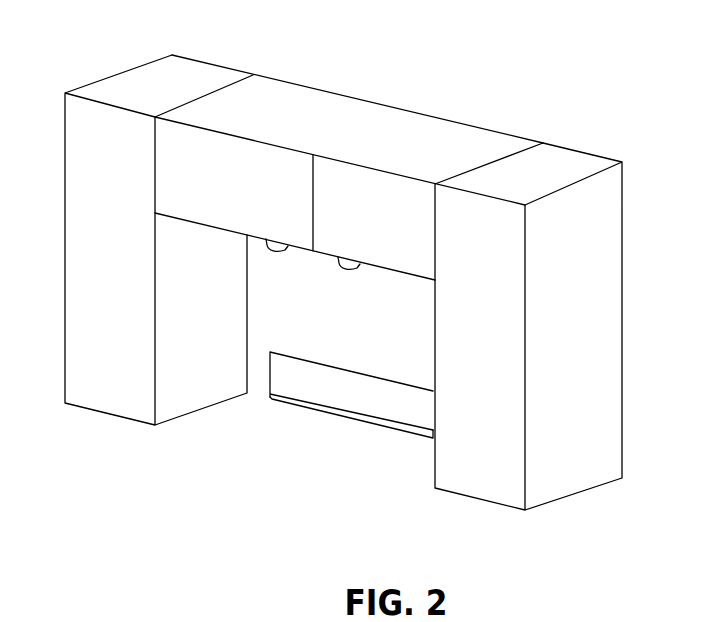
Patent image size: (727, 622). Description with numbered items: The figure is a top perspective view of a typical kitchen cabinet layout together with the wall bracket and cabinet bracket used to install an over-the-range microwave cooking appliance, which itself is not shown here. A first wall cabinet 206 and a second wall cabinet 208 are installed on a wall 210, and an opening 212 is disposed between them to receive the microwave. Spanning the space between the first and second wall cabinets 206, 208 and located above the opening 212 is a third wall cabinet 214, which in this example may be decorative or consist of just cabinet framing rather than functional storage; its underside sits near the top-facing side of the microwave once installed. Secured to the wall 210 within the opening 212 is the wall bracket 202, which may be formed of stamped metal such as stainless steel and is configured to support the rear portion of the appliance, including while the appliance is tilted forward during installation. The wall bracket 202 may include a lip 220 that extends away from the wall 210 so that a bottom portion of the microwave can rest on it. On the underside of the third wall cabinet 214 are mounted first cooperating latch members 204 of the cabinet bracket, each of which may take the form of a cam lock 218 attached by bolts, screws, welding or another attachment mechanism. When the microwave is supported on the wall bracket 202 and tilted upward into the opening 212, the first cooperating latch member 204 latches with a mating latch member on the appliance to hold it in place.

The wall bracket 202 is at (285, 380).
The first cooperating latch member 204 is at (273, 209).
The first wall cabinet 206 is at (85, 395).
The second wall cabinet 208 is at (468, 478).
The wall 210 is at (285, 320).
The opening 212 is at (400, 297).
The third wall cabinet 214 is at (198, 205).
The cam lock 218 is at (355, 272).
The lip 220 is at (347, 412).